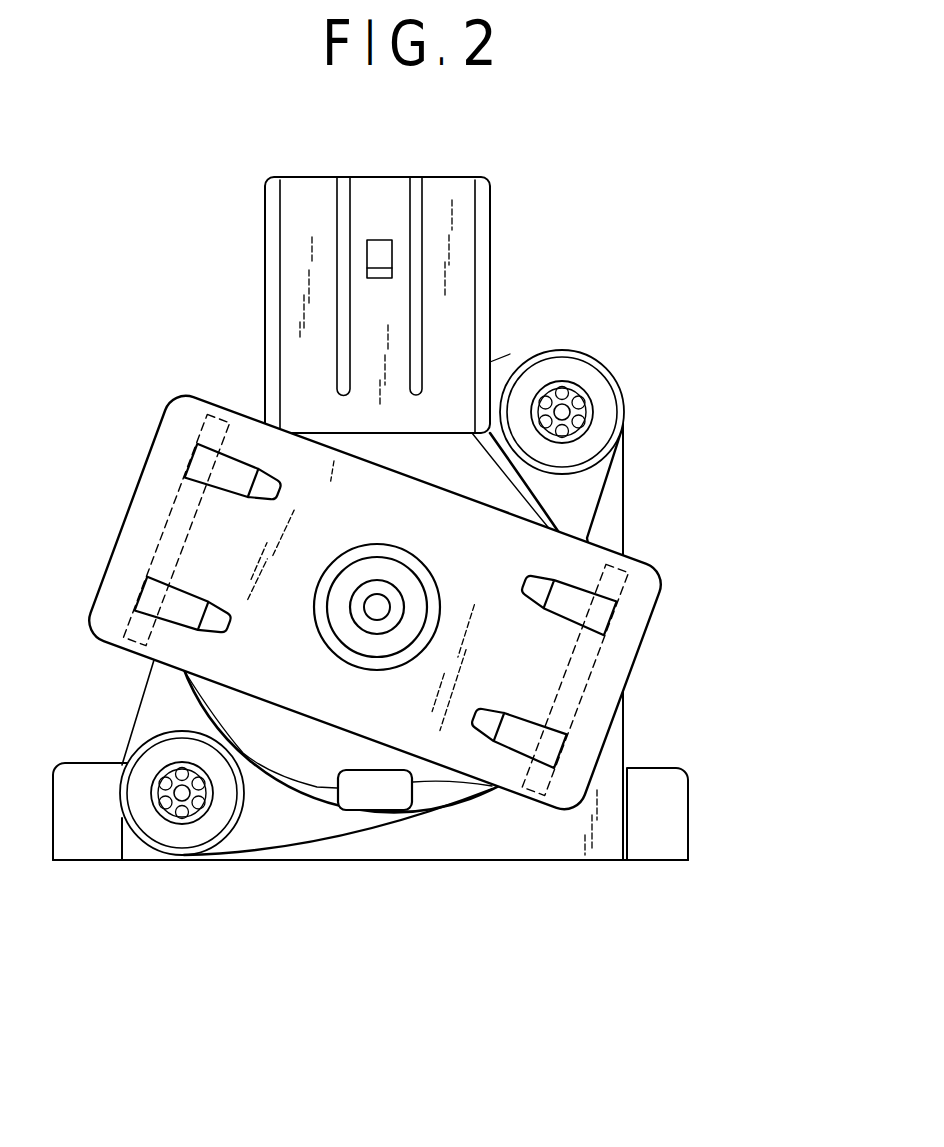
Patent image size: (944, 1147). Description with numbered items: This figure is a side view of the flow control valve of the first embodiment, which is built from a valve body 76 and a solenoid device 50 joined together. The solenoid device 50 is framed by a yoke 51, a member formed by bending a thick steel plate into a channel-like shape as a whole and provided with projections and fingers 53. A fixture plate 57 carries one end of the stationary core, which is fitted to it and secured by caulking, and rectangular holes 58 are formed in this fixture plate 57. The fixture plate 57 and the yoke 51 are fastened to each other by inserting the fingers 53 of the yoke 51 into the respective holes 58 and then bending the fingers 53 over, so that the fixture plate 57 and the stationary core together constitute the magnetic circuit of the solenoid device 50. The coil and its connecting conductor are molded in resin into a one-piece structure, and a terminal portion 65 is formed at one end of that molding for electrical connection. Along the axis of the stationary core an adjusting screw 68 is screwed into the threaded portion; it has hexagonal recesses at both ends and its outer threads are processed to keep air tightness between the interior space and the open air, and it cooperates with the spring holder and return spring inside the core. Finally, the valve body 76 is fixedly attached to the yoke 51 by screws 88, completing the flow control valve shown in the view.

The solenoid device 50 is at (555, 513).
The yoke 51 is at (592, 485).
The fingers 53 is at (598, 616).
The fixture plate 57 is at (648, 594).
The rectangular holes 58 is at (630, 676).
The terminal portion 65 is at (483, 201).
The adjusting screw 68 is at (390, 620).
The valve body 76 is at (626, 730).
The screws 88 is at (597, 386).